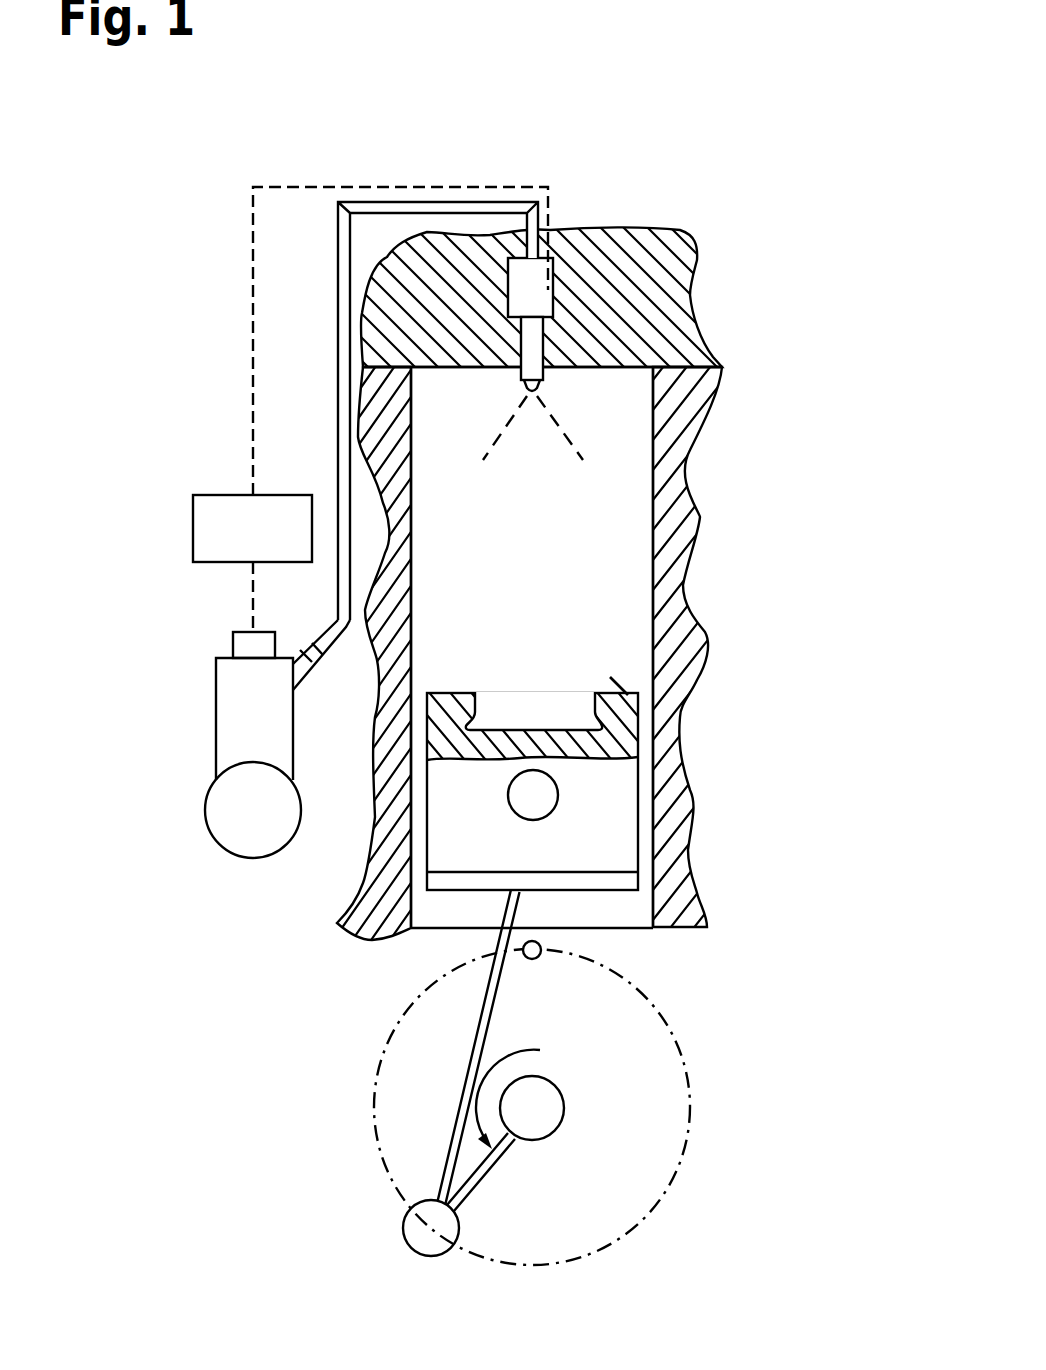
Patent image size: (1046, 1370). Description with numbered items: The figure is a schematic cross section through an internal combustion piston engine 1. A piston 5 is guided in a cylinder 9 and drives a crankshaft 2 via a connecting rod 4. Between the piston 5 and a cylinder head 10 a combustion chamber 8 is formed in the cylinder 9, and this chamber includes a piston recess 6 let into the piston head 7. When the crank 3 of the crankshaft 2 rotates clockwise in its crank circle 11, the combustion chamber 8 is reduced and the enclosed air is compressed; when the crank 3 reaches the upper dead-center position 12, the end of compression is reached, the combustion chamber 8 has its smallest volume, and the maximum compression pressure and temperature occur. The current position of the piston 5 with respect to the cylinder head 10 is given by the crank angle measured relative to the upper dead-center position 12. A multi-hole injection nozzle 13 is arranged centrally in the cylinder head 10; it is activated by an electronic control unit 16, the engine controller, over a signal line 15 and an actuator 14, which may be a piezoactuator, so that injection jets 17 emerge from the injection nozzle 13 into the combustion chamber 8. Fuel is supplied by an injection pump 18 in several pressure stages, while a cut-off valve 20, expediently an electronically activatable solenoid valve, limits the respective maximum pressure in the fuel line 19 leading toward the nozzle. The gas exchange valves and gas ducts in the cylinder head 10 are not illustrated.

The internal combustion piston engine 1 is at (496, 638).
The crankshaft 2 is at (547, 1110).
The crank 3 is at (483, 1172).
The connecting rod 4 is at (452, 1128).
The piston 5 is at (615, 847).
The piston recess 6 is at (577, 717).
The piston head 7 is at (627, 688).
The combustion chamber 8 is at (627, 543).
The cylinder 9 is at (668, 453).
The cylinder head 10 is at (373, 308).
The crank circle 11 is at (682, 1053).
The upper dead-center position 12 is at (541, 950).
The injection nozzle 13 is at (533, 342).
The actuator 14 is at (515, 301).
The signal line 15 is at (252, 236).
The electronic control unit 16 is at (227, 505).
The injection jets 17 is at (510, 415).
The injection pump 18 is at (235, 735).
The fuel line 19 is at (347, 588).
The cut-off valve 20 is at (250, 645).